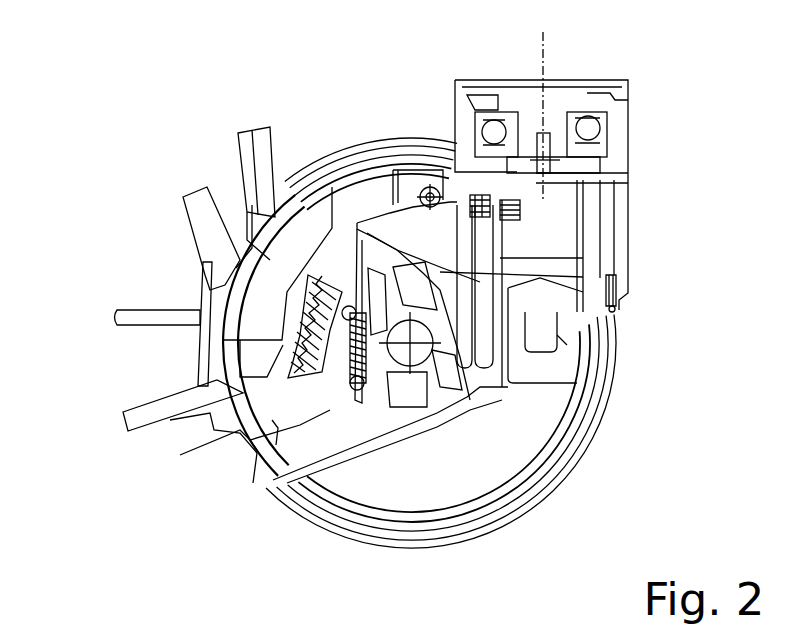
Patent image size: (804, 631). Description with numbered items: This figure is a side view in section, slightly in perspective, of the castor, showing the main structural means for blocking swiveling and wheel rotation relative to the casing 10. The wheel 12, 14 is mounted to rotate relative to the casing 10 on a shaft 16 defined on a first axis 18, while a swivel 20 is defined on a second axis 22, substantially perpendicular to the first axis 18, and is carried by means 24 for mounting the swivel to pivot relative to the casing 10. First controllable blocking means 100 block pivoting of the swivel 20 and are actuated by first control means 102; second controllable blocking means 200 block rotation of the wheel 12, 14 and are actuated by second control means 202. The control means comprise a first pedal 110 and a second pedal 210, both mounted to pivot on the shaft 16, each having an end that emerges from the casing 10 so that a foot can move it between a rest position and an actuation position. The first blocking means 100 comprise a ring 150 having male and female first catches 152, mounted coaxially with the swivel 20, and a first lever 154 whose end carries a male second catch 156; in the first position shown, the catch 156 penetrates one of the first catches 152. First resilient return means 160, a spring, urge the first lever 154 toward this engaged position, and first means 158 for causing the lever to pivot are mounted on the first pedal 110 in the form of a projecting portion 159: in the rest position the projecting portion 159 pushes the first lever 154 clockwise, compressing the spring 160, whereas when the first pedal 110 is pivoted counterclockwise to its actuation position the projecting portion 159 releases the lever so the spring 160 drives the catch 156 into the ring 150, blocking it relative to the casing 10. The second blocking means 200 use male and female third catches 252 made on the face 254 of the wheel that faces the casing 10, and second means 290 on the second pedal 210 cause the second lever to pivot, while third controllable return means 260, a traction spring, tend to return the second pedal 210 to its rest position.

The casing 10 is at (300, 177).
The wheel 12 is at (337, 520).
The wheel 14 is at (305, 566).
The shaft 16 is at (510, 392).
The first axis 18 is at (505, 368).
The swivel 20 is at (603, 130).
The second axis 22 is at (545, 62).
The means for mounting the swivel 24 is at (457, 103).
The first controllable blocking means 100 is at (397, 193).
The first control means 102 is at (353, 430).
The first pedal 110 is at (237, 450).
The ring 150 is at (575, 160).
The first catches 152 is at (575, 186).
The first lever 154 is at (463, 193).
The male second catch 156 is at (498, 173).
The first means for causing the first lever to pivot 158 is at (440, 252).
The projecting portion 159 is at (538, 385).
The first resilient return means 160 is at (525, 205).
The second controllable blocking means 200 is at (300, 297).
The second control means 202 is at (233, 400).
The second pedal 210 is at (210, 280).
The third catches 252 is at (300, 320).
The face of the wheel 254 is at (267, 353).
The third controllable return means 260 is at (343, 372).
The second means for causing the second lever to pivot 290 is at (270, 425).